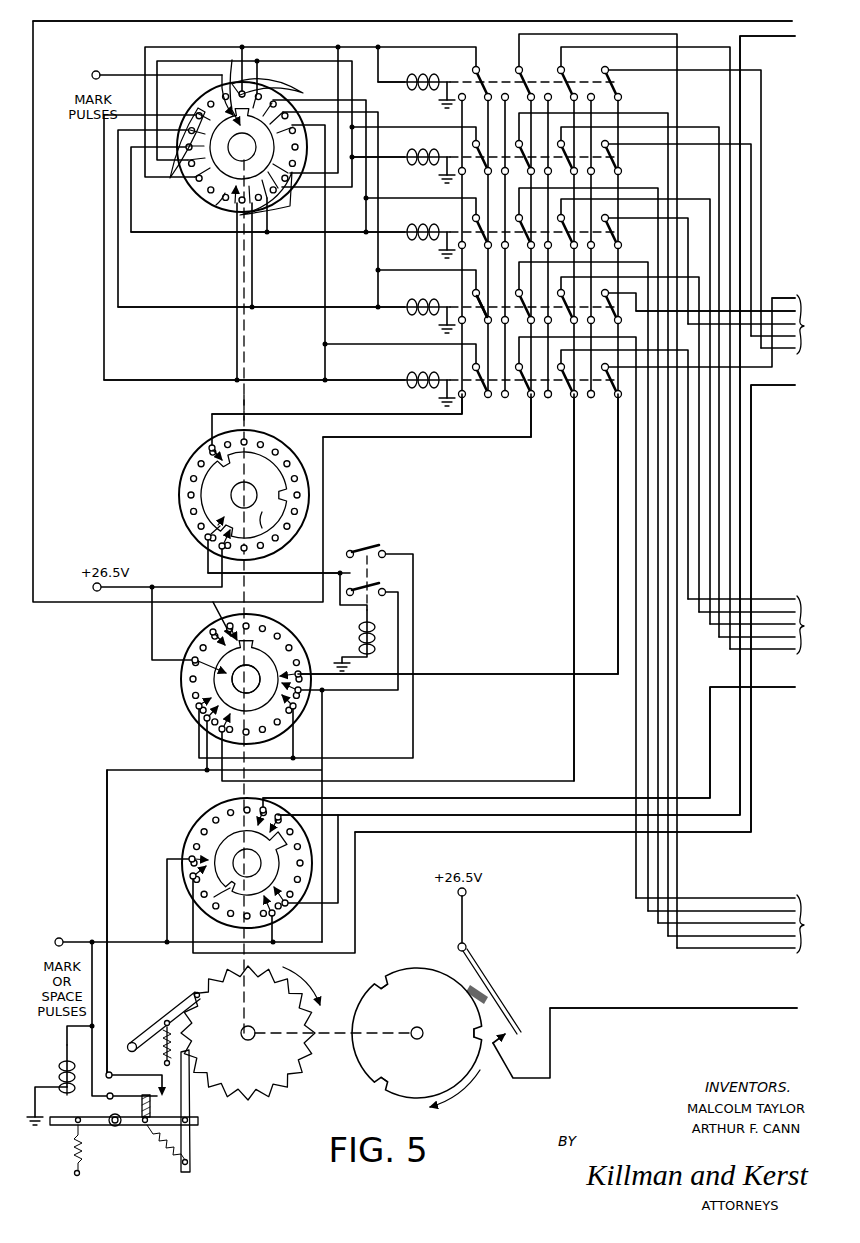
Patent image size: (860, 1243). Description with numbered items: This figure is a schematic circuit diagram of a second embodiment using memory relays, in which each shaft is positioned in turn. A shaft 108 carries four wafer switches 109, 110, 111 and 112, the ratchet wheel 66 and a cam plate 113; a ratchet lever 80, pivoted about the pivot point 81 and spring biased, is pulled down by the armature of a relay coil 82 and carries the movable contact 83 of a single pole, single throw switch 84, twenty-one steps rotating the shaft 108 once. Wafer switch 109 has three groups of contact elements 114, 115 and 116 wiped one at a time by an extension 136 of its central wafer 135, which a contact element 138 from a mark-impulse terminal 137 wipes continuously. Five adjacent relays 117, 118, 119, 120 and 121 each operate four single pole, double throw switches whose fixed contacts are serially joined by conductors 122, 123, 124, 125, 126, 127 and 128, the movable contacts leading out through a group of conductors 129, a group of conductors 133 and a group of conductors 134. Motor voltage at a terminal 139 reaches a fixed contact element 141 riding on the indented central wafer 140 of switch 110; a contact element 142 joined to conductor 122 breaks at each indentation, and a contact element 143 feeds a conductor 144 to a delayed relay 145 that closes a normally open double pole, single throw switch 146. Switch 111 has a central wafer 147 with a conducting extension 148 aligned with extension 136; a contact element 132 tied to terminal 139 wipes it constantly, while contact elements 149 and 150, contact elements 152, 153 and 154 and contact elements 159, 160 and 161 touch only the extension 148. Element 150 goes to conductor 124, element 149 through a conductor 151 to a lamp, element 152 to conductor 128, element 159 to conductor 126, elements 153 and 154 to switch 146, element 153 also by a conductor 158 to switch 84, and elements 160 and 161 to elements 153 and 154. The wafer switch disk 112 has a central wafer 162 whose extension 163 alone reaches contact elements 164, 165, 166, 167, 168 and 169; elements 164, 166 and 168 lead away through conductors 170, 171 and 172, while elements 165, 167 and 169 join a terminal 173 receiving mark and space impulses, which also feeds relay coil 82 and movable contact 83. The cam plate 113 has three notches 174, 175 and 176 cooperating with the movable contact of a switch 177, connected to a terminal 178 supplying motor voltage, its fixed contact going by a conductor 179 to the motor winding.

The ratchet wheel 66 is at (254, 1092).
The ratchet lever 80 is at (139, 1127).
The pivot point 81 is at (111, 1126).
The relay coil 82 is at (60, 1073).
The movable contact 83 is at (150, 1100).
The single pole, single throw switch 84 is at (134, 1084).
The shaft 108 is at (248, 412).
The wafer switch 109 is at (160, 104).
The wafer switch 110 is at (288, 435).
The wafer switch 111 is at (300, 639).
The wafer switch disk 112 is at (168, 819).
The cam plate 113 is at (366, 1065).
The group of contact elements 114 is at (276, 82).
The group of contact elements 115 is at (279, 196).
The group of contact elements 116 is at (178, 155).
The relay 117 is at (421, 84).
The relay 118 is at (421, 159).
The relay 119 is at (421, 234).
The relay 120 is at (422, 309).
The relay 121 is at (422, 382).
The conductor 122 is at (420, 416).
The conductor 123 is at (506, 283).
The conductor 124 is at (498, 438).
The conductor 125 is at (553, 396).
The conductor 126 is at (573, 498).
The conductor 127 is at (595, 396).
The conductor 128 is at (618, 446).
The group of conductors 129 is at (731, 324).
The contact element 132 is at (190, 665).
The group of conductors 133 is at (758, 625).
The group of conductors 134 is at (732, 924).
The central wafer 135 is at (215, 205).
The extension 136 is at (232, 60).
The terminal 137 is at (94, 71).
The contact element 138 is at (210, 87).
The terminal 139 is at (90, 592).
The central wafer 140 is at (264, 519).
The fixed contact element 141 is at (230, 517).
The contact element 142 is at (222, 462).
The contact element 143 is at (204, 538).
The conductor 144 is at (278, 572).
The relay 145 is at (376, 650).
The double pole, single throw switch 146 is at (372, 577).
The central wafer 147 is at (270, 667).
The conducting extension 148 is at (254, 642).
The contact element 149 is at (226, 626).
The contact element 150 is at (208, 643).
The conductor 151 is at (510, 22).
The contact element 152 is at (301, 671).
The contact element 153 is at (300, 695).
The contact element 154 is at (292, 710).
The conductor 158 is at (107, 798).
The contact element 159 is at (219, 732).
The contact element 160 is at (204, 720).
The contact element 161 is at (194, 707).
The central wafer 162 is at (222, 900).
The extension 163 is at (286, 842).
The contact element 164 is at (256, 818).
The contact element 165 is at (280, 822).
The contact element 166 is at (286, 905).
The contact element 167 is at (274, 916).
The contact element 168 is at (193, 880).
The contact element 169 is at (196, 855).
The conductor 170 is at (788, 694).
The conductor 171 is at (773, 42).
The conductor 172 is at (781, 392).
The terminal 173 is at (60, 938).
The notch 174 is at (382, 982).
The notch 175 is at (480, 1028).
The notch 176 is at (388, 1090).
The switch 177 is at (514, 1040).
The terminal 178 is at (470, 892).
The conductor 179 is at (772, 1012).